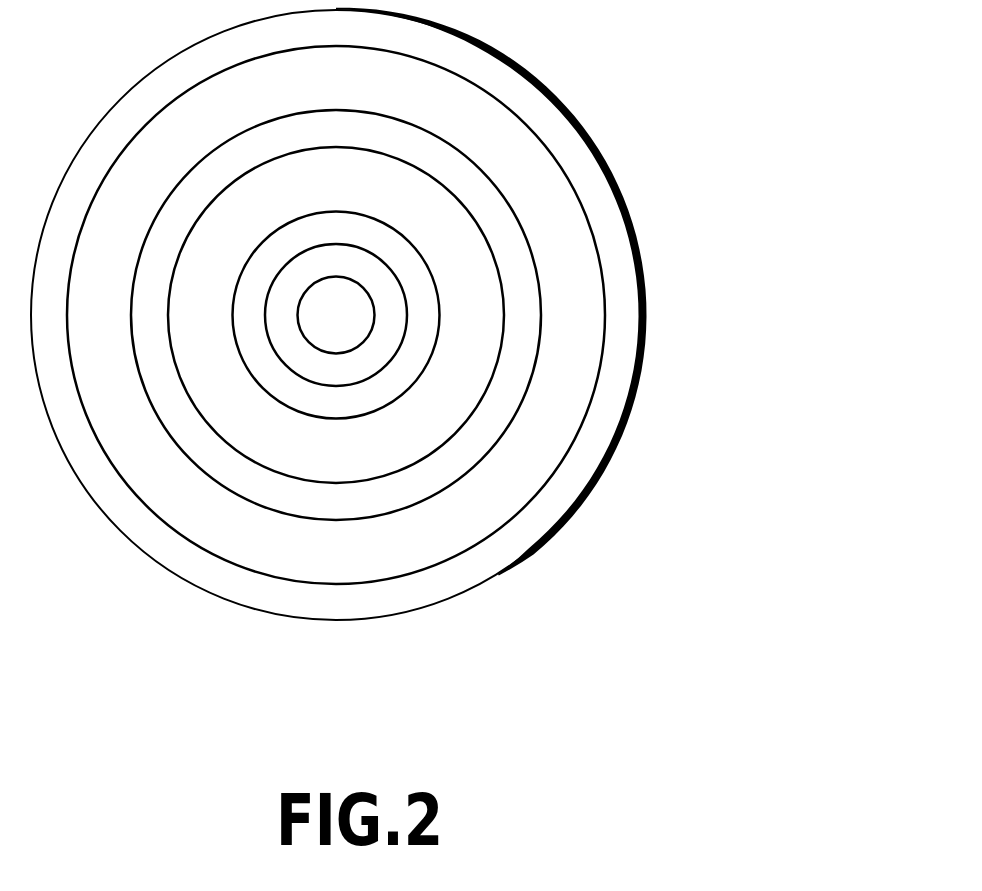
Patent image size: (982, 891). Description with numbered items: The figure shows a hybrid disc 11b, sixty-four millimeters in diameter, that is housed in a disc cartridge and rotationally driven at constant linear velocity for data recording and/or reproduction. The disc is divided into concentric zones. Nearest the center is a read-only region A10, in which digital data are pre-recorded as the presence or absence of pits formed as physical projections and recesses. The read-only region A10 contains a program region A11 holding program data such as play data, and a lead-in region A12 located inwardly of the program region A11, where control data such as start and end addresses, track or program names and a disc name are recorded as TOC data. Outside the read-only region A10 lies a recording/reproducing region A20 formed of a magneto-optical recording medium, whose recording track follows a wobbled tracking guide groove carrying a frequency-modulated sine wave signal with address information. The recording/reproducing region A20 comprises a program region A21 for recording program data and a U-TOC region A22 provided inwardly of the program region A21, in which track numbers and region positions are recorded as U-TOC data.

The hybrid disc 11b is at (625, 118).
The read-only region A10 is at (510, 315).
The program region A11 is at (473, 295).
The lead-in region A12 is at (407, 262).
The recording/reproducing region A20 is at (462, 315).
The program region A21 is at (532, 467).
The U-TOC region A22 is at (507, 392).